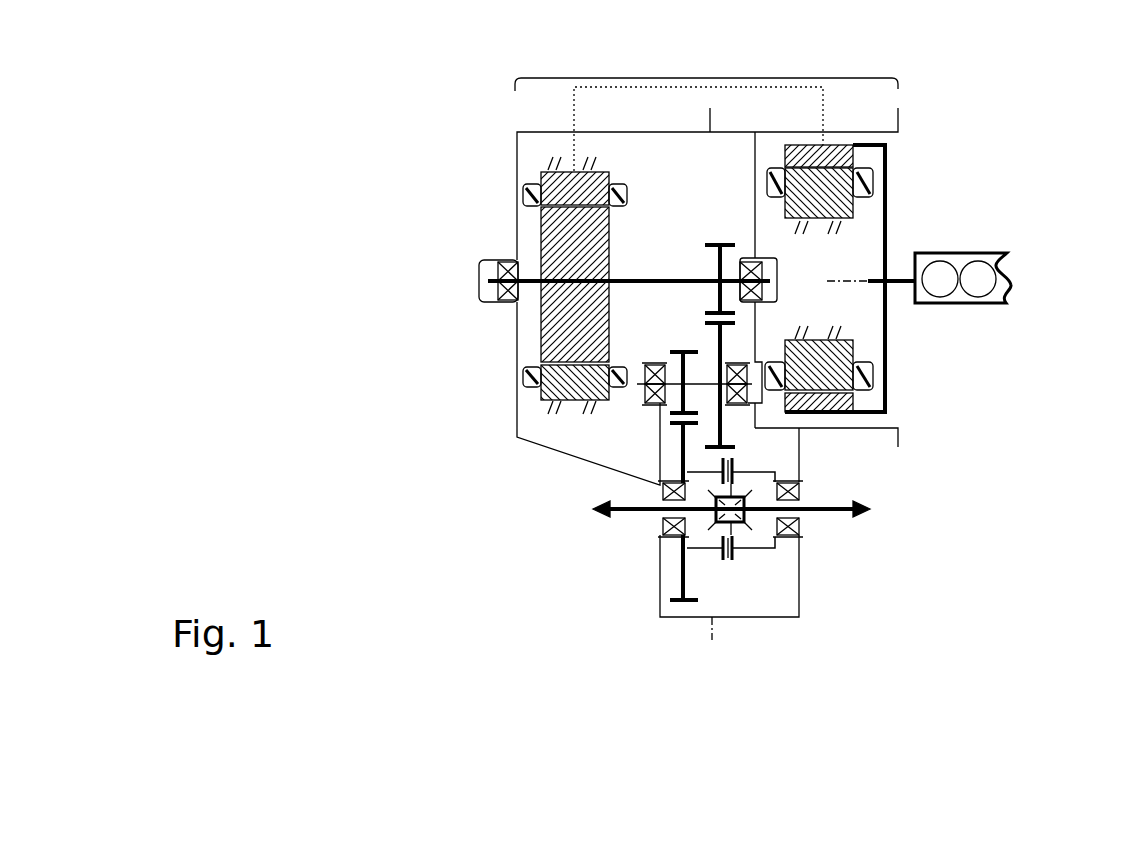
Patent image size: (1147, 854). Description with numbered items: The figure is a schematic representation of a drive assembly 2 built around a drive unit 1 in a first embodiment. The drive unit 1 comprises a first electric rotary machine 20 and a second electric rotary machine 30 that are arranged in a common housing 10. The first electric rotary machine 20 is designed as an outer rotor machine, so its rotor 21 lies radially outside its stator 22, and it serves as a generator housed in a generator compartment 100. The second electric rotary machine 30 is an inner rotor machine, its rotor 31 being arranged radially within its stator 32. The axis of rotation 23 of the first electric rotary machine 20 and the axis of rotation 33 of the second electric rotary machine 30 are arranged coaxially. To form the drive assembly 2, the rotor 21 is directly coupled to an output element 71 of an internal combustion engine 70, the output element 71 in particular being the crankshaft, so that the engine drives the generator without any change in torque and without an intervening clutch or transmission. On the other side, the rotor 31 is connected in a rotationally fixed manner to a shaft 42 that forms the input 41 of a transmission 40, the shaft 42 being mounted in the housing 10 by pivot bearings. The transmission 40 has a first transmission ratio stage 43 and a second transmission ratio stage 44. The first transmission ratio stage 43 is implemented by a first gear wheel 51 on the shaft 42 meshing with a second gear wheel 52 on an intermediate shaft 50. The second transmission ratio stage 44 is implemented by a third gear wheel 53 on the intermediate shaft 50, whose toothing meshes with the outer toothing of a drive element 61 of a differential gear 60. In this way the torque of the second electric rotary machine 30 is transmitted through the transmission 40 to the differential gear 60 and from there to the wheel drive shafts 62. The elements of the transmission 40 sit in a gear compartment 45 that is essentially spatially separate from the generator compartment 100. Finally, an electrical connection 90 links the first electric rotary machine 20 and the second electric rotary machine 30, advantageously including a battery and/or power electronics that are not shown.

The drive unit 1 is at (710, 78).
The drive assembly 2 is at (1058, 92).
The housing 10 is at (898, 132).
The first electric rotary machine 20 is at (872, 205).
The rotor 21 is at (853, 158).
The stator 22 is at (833, 258).
The axis of rotation 23 is at (850, 285).
The second electric rotary machine 30 is at (517, 280).
The rotor 31 is at (565, 265).
The stator 32 is at (540, 178).
The axis of rotation 33 is at (541, 312).
The transmission 40 is at (682, 399).
The input 41 is at (512, 334).
The shaft 42 is at (575, 285).
The first transmission ratio stage 43 is at (733, 320).
The second transmission ratio stage 44 is at (700, 428).
The gear compartment 45 is at (617, 410).
The intermediate shaft 50 is at (727, 407).
The first gear wheel 51 is at (715, 252).
The second gear wheel 52 is at (712, 333).
The third gear wheel 53 is at (660, 410).
The differential gear 60 is at (752, 545).
The drive element 61 is at (690, 457).
The wheel drive shafts 62 is at (613, 515).
The internal combustion engine 70 is at (1007, 258).
The output element 71 is at (990, 316).
The electrical connection 90 is at (607, 87).
The generator compartment 100 is at (883, 278).